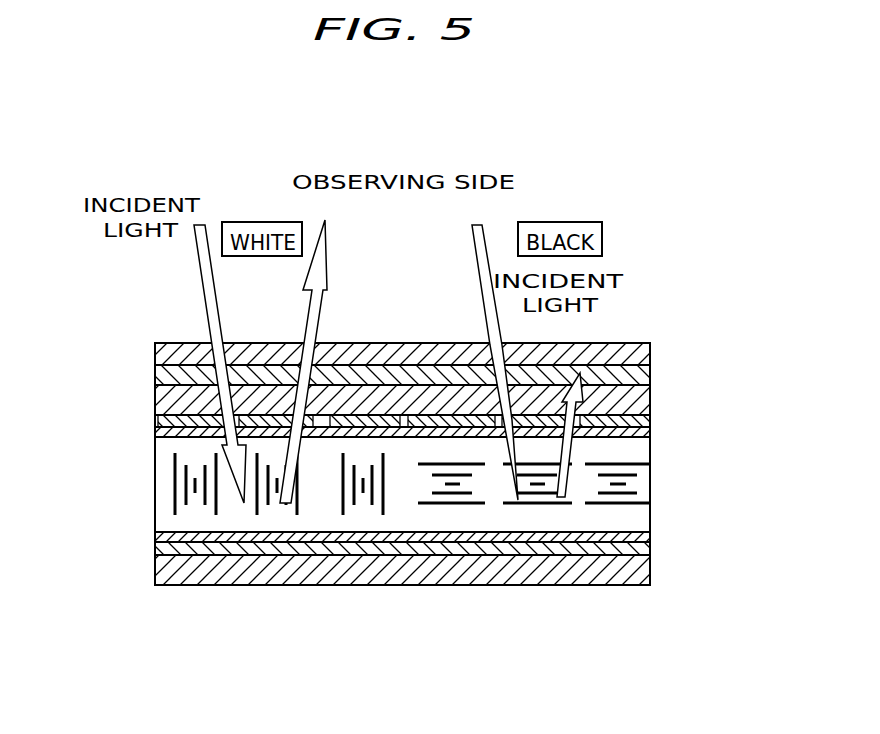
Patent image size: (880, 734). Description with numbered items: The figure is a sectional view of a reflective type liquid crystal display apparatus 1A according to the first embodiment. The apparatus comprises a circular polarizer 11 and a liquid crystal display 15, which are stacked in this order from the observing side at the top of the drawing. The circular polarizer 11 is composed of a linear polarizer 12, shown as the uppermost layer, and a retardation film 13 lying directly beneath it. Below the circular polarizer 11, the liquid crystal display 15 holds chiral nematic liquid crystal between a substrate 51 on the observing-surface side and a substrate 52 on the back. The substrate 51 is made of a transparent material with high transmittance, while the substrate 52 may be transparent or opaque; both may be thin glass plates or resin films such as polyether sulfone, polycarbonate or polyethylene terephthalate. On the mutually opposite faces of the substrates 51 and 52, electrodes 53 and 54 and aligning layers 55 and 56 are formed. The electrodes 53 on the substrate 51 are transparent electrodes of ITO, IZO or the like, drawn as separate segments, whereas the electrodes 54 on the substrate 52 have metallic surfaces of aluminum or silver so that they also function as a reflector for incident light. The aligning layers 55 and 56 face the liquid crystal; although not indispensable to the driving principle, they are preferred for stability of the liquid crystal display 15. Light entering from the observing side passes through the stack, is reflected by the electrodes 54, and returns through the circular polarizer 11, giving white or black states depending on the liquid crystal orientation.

The liquid crystal display apparatus 1A is at (404, 258).
The circular polarizer 11 is at (718, 335).
The linear polarizer 12 is at (652, 352).
The retardation film 13 is at (652, 378).
The liquid crystal display 15 is at (660, 388).
The substrate 51 is at (165, 402).
The substrate 52 is at (160, 568).
The electrodes 53 is at (162, 421).
The electrodes 54 is at (160, 548).
The aligning layer 55 is at (157, 440).
The aligning layer 56 is at (162, 535).